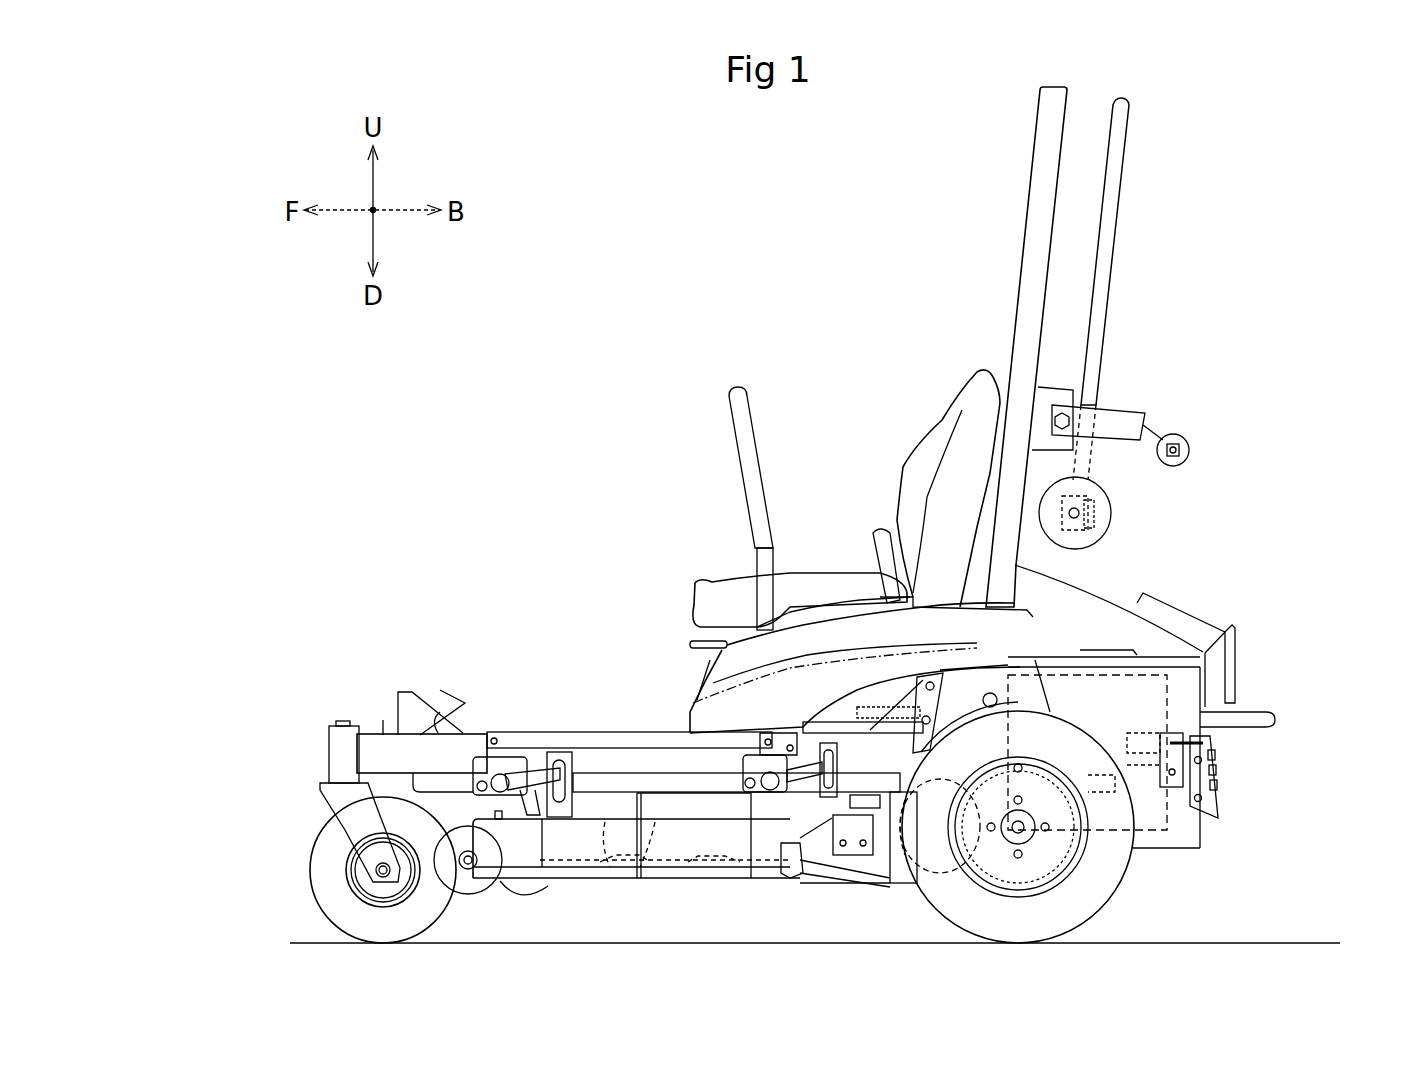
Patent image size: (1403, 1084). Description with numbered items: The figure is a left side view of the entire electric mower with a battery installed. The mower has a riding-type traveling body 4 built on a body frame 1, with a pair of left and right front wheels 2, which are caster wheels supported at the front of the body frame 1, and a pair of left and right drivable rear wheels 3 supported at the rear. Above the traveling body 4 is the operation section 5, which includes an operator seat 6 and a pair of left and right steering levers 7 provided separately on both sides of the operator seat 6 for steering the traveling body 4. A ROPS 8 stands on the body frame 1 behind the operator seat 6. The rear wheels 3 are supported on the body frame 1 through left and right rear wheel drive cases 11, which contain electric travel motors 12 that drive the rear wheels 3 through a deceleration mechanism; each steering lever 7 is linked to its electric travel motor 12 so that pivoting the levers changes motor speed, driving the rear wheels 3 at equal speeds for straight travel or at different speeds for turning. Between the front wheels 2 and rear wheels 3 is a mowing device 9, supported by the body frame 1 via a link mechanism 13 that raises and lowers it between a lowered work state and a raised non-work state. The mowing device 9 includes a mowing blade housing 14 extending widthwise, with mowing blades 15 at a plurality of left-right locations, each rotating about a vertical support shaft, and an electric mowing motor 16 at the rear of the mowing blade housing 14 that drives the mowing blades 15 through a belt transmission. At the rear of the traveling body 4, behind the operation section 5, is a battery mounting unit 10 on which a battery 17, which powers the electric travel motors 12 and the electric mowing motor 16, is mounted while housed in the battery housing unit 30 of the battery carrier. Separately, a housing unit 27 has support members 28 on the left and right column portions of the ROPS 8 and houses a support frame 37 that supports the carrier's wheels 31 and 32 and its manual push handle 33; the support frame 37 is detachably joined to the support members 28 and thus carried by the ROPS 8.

The body frame 1 is at (384, 733).
The front wheels 2 is at (318, 873).
The rear wheels 3 is at (1110, 886).
The traveling body 4 is at (500, 658).
The operation section 5 is at (830, 375).
The operator seat 6 is at (822, 580).
The steering levers 7 is at (733, 400).
The ROPS 8 is at (1030, 170).
The mowing device 9 is at (535, 915).
The battery mounting unit 10 is at (1255, 866).
The rear wheel drive cases 11 is at (960, 870).
The electric travel motors 12 is at (903, 850).
The link mechanism 13 is at (598, 730).
The mowing blade housing 14 is at (760, 860).
The mowing blades 15 is at (700, 880).
The electric mowing motor 16 is at (820, 845).
The battery 17 is at (1200, 712).
The housing unit 27 is at (1190, 217).
The support members 28 is at (1058, 385).
The battery housing unit 30 is at (1140, 690).
The wheel 31 is at (1111, 513).
The wheel 32 is at (1190, 450).
The manual push handle 33 is at (1116, 148).
The support frame 37 is at (1125, 405).